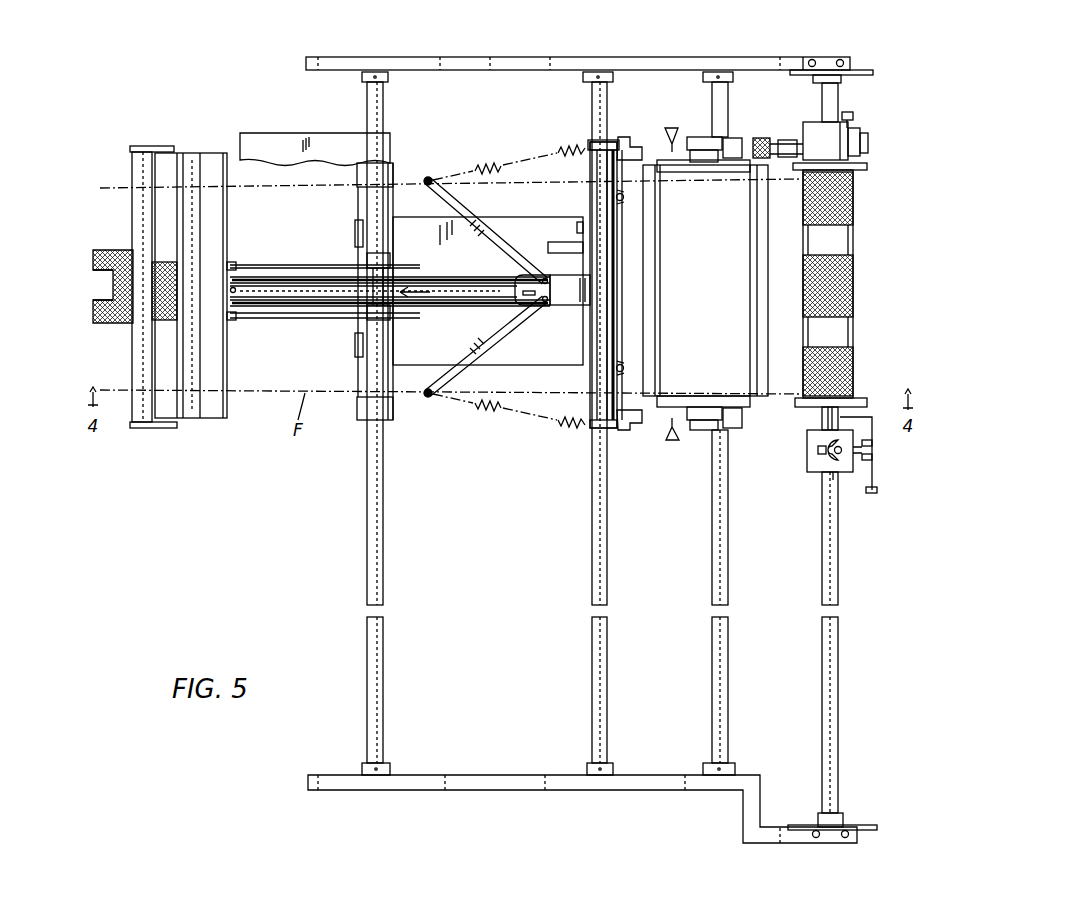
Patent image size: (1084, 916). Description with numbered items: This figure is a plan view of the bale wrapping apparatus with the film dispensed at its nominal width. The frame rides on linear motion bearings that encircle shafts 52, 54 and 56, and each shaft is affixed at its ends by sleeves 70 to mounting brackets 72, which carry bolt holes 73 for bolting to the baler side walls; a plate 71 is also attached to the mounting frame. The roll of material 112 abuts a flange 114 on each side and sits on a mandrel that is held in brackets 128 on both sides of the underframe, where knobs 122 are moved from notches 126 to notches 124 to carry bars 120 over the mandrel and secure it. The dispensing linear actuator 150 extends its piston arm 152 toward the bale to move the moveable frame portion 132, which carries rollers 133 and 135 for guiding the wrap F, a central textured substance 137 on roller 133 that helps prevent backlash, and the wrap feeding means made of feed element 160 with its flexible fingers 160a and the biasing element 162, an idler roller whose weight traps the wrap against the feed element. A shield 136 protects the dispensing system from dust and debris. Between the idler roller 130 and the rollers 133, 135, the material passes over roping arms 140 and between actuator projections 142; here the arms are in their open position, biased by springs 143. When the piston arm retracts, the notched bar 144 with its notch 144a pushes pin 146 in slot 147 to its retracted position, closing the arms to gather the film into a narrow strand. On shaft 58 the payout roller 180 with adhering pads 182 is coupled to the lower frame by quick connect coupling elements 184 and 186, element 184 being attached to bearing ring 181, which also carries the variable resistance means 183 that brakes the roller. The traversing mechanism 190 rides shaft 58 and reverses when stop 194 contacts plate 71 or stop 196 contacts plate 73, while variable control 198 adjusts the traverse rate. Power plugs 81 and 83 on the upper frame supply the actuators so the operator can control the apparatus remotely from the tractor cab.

The shaft 52 is at (385, 562).
The shaft 54 is at (608, 590).
The shaft 56 is at (730, 600).
The shaft 58 is at (840, 600).
The sleeve 70 is at (735, 72).
The plate 71 is at (862, 70).
The mounting bracket 72 is at (505, 57).
The bolt hole 73 is at (317, 57).
The power plug 81 is at (577, 225).
The power plug 83 is at (622, 137).
The roll of material 112 is at (763, 396).
The flange 114 is at (725, 178).
The bar 120 is at (697, 137).
The knob 122 is at (672, 127).
The notch 124 is at (678, 172).
The notch 126 is at (633, 137).
The bracket 128 is at (728, 137).
The idler roller 130 is at (590, 143).
The moveable frame portion 132 is at (228, 218).
The roller 133 is at (150, 150).
The roller 135 is at (205, 153).
The shield 136 is at (270, 133).
The textured substance 137 is at (178, 305).
The roping arm 140 is at (505, 235).
The actuator projection 142 is at (428, 176).
The spring 143 is at (452, 176).
The notched bar 144 is at (322, 300).
The notch 144a is at (434, 294).
The pin 146 is at (515, 300).
The slot 147 is at (540, 310).
The dispensing linear actuator 150 is at (478, 272).
The piston arm 152 is at (255, 265).
The feed element 160 is at (108, 250).
The flexible finger 160a is at (95, 330).
The biasing element 162 is at (150, 428).
The payout roller 180 is at (853, 238).
The bearing ring 181 is at (820, 138).
The adhering pad 182 is at (853, 192).
The variable resistance means 183 is at (860, 150).
The quick connect coupling element 184 is at (765, 160).
The quick connect coupling element 186 is at (755, 138).
The traversing mechanism 190 is at (815, 462).
The stop 194 is at (878, 492).
The stop 196 is at (853, 116).
The variable control 198 is at (833, 462).